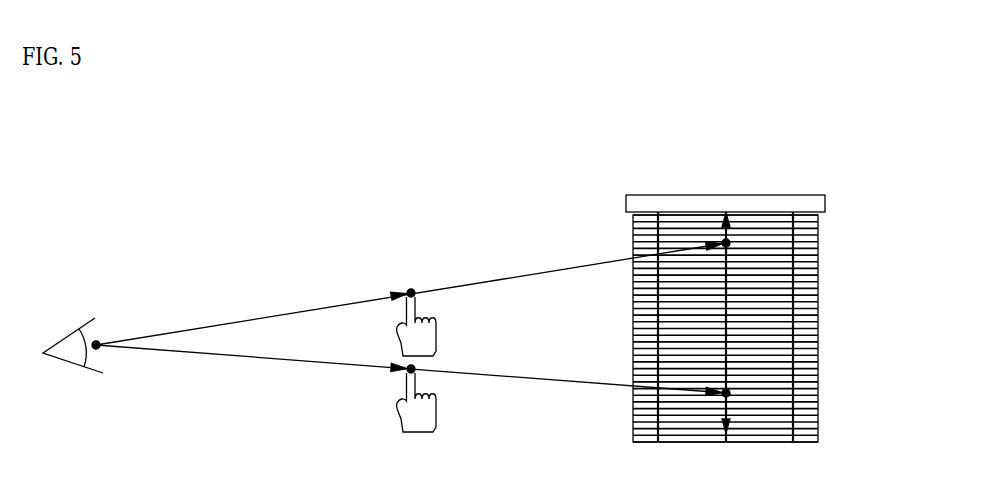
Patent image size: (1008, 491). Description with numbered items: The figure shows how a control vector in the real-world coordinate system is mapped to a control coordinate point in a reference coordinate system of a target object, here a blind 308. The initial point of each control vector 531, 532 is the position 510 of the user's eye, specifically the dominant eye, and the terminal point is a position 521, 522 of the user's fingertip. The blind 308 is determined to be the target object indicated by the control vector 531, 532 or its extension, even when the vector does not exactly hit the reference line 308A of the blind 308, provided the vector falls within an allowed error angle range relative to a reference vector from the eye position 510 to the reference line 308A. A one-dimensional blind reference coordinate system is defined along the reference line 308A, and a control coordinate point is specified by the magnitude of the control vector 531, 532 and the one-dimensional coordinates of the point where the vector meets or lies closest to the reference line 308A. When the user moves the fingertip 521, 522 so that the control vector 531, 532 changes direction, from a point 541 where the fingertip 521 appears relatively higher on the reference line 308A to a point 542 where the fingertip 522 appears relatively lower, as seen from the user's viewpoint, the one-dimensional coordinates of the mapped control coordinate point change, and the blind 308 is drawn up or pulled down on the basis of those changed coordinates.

The position of an eye of the user 510 is at (98, 341).
The position of a fingertip of the user 521 is at (411, 289).
The position of a fingertip of the user 522 is at (405, 376).
The control vector 531 is at (260, 317).
The control vector 532 is at (222, 355).
The blind 308 is at (797, 200).
The reference line of the blind 308A is at (724, 232).
The point where the fingertip appears relatively higher 541 is at (730, 243).
The point where the fingertip appears relatively lower 542 is at (730, 393).